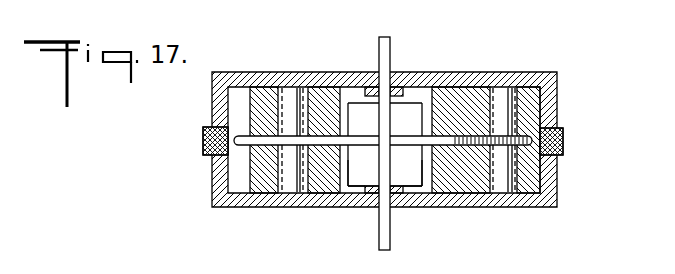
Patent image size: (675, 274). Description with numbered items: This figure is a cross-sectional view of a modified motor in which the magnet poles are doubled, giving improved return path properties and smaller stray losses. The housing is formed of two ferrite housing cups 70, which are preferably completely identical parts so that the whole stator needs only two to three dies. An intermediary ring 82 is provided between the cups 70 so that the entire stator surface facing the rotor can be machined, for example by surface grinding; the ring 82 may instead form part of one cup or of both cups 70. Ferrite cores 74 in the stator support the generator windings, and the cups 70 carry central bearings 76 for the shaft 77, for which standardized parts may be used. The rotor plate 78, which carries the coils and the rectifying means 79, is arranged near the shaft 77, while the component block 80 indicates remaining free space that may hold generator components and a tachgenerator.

The cup 70 is at (213, 93).
The ferrite cores 74 is at (293, 186).
The bearings 76 is at (374, 88).
The rotor shaft 77 is at (391, 47).
The rotor plate 78 is at (453, 140).
The rectifying means 79 is at (410, 110).
The component block 80 is at (413, 186).
The intermediary ring 82 is at (203, 138).